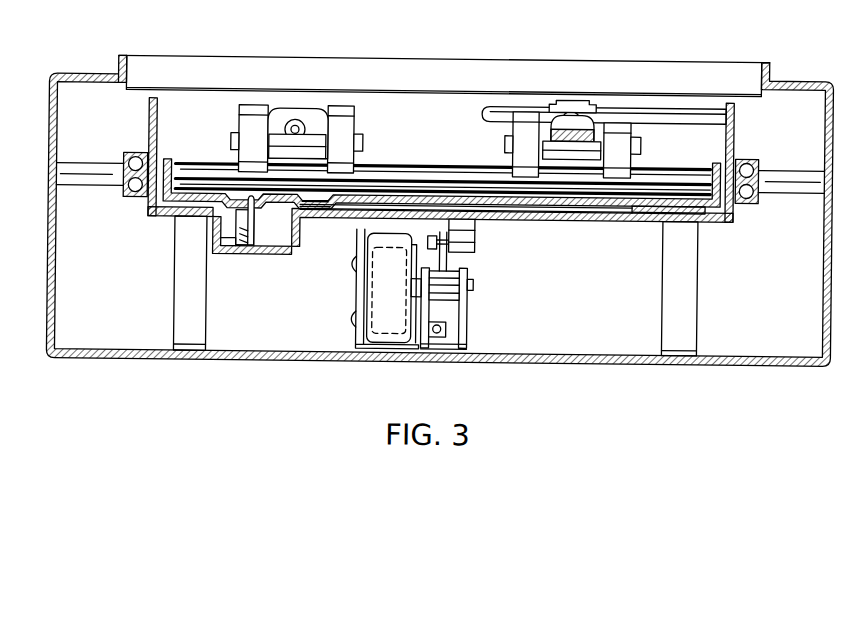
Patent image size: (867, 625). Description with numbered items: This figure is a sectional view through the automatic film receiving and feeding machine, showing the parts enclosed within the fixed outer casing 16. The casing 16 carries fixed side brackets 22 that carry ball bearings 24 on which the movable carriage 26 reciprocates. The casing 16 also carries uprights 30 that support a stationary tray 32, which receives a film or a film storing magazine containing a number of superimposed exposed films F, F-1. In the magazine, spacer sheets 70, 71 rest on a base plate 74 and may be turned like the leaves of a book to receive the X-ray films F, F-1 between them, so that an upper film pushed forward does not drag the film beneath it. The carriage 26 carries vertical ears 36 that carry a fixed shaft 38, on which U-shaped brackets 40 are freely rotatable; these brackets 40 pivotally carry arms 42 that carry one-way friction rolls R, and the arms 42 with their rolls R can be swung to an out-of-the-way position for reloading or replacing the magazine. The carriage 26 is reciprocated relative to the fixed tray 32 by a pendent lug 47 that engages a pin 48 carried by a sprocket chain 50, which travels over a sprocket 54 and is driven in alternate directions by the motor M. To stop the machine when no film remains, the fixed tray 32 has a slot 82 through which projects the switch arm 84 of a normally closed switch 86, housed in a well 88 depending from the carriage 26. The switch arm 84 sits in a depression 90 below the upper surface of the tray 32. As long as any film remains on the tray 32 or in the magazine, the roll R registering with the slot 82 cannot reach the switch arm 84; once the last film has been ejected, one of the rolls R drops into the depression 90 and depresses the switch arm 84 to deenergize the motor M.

The outer casing 16 is at (260, 359).
The side brackets 22 is at (105, 167).
The ball bearings 24 is at (134, 156).
The movable carriage 26 is at (147, 214).
The uprights 30 is at (176, 319).
The stationary tray 32 is at (566, 206).
The vertical ears 36 is at (157, 111).
The fixed shaft 38 is at (667, 107).
The U-shaped brackets 40 is at (570, 100).
The arms 42 is at (296, 120).
The pendent lug 47 is at (476, 229).
The pin 48 is at (470, 246).
The sprocket chain 50 is at (442, 333).
The sprocket 54 is at (447, 319).
The spacer sheet 70 is at (386, 165).
The spacer sheet 71 is at (439, 182).
The base plate 74 is at (598, 212).
The slot 82 is at (256, 216).
The switch arm 84 is at (253, 247).
The switch 86 is at (249, 248).
The well 88 is at (236, 257).
The depression 90 is at (337, 211).
The X-ray film F is at (408, 177).
The X-ray film F-1 is at (464, 191).
The one-way friction rolls R is at (243, 115).
The motor M is at (372, 289).